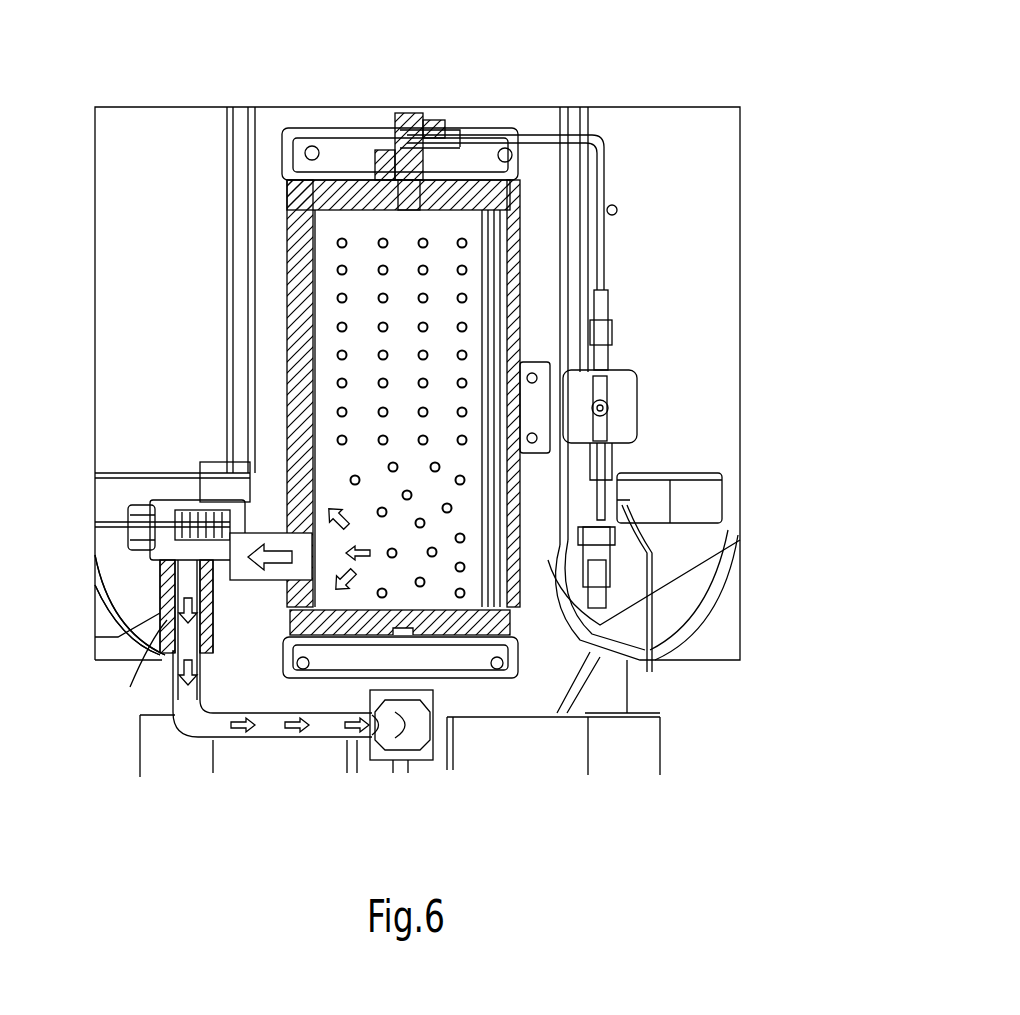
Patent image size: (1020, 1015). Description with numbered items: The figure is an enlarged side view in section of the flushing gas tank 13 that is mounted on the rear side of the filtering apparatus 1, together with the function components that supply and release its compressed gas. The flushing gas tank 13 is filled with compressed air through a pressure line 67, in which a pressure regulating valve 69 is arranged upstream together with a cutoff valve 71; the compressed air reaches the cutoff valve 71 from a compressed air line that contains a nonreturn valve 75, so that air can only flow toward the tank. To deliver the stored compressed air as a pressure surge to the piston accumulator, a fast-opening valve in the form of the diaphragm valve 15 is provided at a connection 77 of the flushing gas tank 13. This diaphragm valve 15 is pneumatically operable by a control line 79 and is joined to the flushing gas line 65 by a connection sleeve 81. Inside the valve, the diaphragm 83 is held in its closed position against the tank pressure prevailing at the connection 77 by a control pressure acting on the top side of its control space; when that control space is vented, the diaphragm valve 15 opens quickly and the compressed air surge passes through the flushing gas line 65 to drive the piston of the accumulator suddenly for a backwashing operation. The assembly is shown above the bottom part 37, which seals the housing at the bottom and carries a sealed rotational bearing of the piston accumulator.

The separator housing 1 is at (272, 195).
The flushing gas tank 13 is at (300, 330).
The diaphragm control valve 15 is at (178, 527).
The bottom part 37 is at (455, 690).
The flushing gas line 65 is at (270, 730).
The pressure line 67 is at (610, 173).
The pressure regulating valve 69 is at (627, 395).
The cutoff valve 71 is at (655, 500).
The nonreturn valve 75 is at (608, 560).
The connection 77 is at (282, 520).
The control line 79 is at (240, 265).
The connection sleeve 81 is at (160, 628).
The diaphragm 83 is at (130, 545).